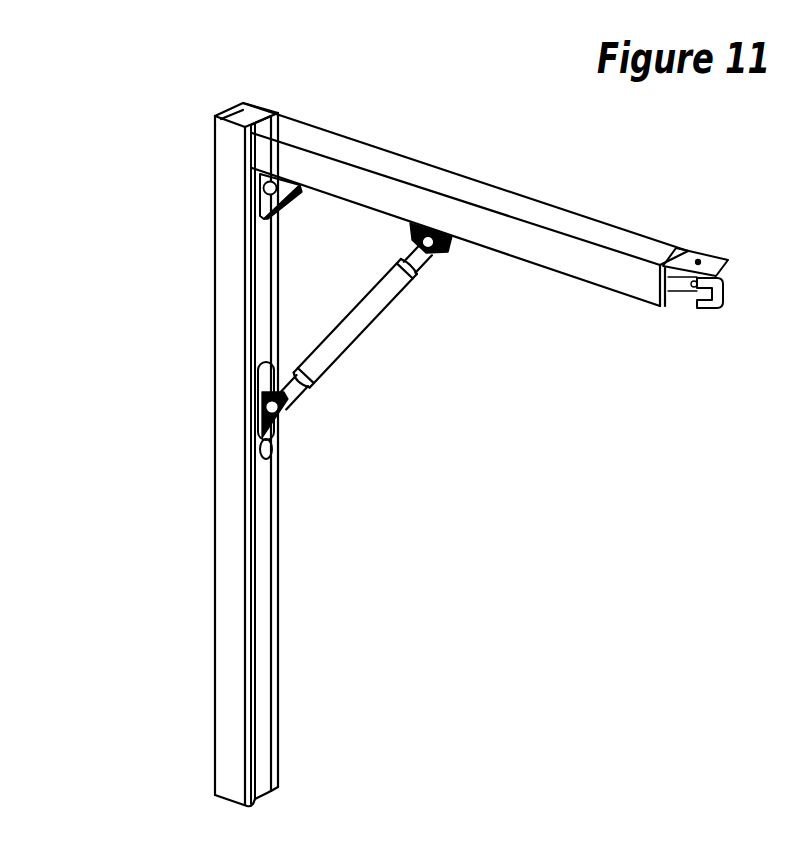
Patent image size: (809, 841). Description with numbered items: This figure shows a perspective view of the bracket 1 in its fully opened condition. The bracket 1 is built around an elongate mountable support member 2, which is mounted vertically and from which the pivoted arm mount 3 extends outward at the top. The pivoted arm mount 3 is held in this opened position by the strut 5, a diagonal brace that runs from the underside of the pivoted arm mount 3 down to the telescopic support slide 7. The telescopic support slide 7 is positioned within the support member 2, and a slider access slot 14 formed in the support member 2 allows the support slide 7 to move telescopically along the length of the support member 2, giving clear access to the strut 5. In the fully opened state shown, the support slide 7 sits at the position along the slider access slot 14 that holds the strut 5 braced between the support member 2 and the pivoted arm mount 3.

The bracket 1 is at (185, 180).
The mountable support member 2 is at (214, 688).
The pivoted arm mount 3 is at (622, 228).
The strut 5 is at (367, 333).
The telescopic support slide 7 is at (278, 460).
The slider access slot 14 is at (258, 662).